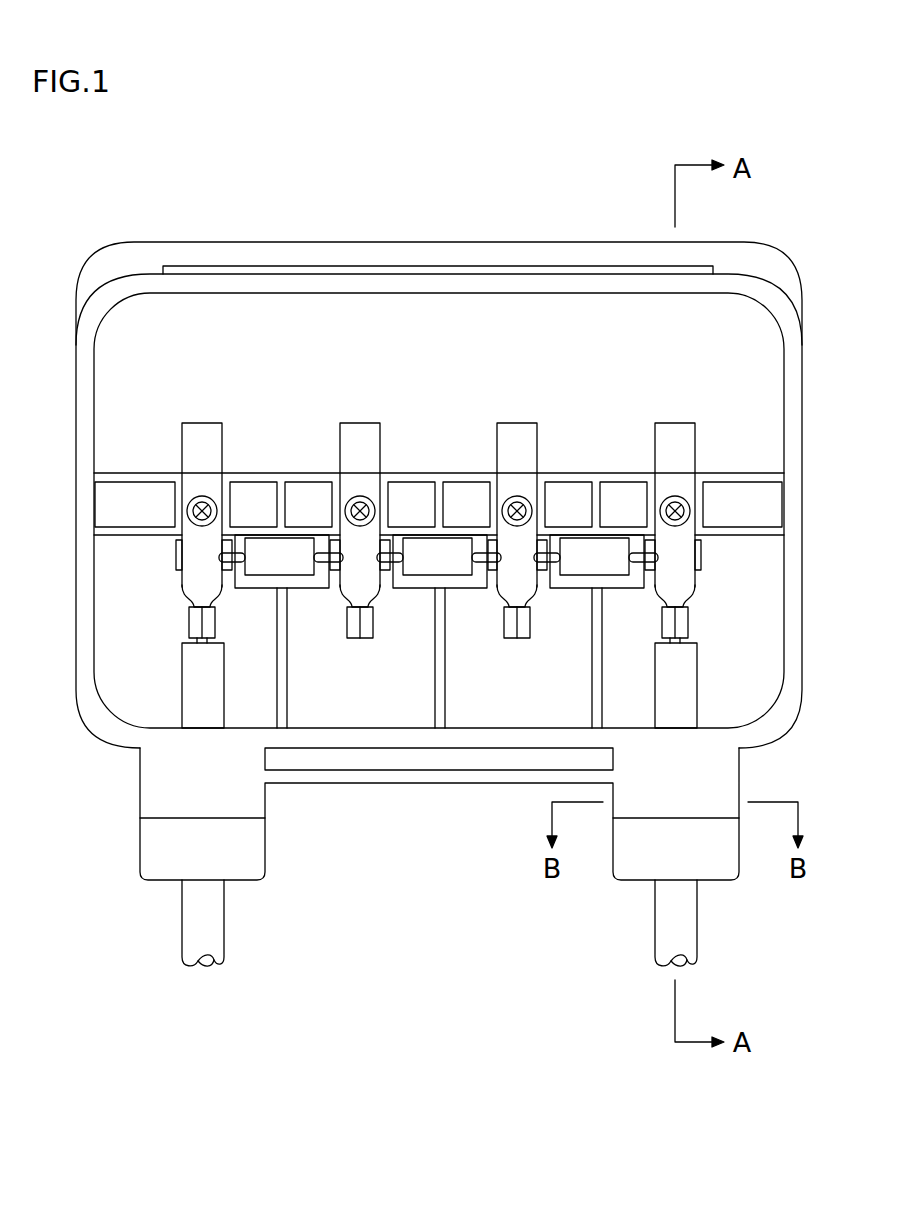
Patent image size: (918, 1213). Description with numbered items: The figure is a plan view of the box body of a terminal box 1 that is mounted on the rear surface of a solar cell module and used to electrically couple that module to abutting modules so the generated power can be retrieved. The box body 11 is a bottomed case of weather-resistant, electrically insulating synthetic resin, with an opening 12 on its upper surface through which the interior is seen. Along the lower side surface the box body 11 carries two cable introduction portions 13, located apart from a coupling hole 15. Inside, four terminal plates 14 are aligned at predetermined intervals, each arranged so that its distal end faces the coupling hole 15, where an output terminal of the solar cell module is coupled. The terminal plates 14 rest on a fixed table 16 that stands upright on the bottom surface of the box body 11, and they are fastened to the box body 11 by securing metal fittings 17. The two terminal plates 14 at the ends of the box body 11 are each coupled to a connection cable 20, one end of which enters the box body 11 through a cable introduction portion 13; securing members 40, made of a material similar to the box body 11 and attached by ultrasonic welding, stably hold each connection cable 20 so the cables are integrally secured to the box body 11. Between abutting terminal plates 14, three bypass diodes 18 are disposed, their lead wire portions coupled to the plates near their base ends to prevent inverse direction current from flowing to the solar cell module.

The terminal box 1 is at (441, 218).
The box body 11 is at (74, 448).
The opening 12 is at (763, 700).
The cable introduction portion 13 is at (128, 788).
The terminal plate 14 is at (230, 418).
The coupling hole 15 is at (128, 381).
The fixed table 16 is at (178, 482).
The securing metal fitting 17 is at (208, 497).
The bypass diode 18 is at (296, 565).
The connection cable 20 is at (187, 940).
The securing member 40 is at (255, 842).